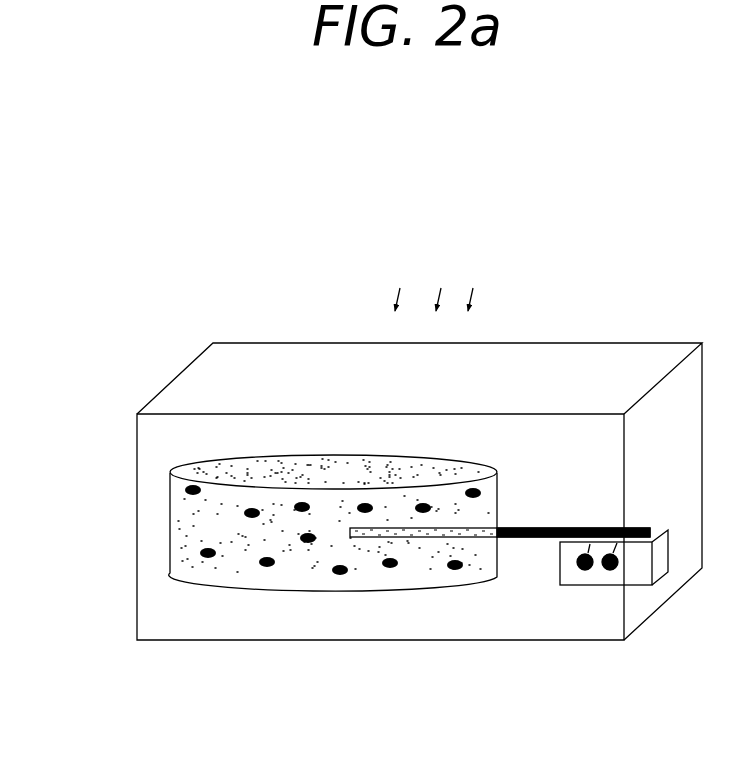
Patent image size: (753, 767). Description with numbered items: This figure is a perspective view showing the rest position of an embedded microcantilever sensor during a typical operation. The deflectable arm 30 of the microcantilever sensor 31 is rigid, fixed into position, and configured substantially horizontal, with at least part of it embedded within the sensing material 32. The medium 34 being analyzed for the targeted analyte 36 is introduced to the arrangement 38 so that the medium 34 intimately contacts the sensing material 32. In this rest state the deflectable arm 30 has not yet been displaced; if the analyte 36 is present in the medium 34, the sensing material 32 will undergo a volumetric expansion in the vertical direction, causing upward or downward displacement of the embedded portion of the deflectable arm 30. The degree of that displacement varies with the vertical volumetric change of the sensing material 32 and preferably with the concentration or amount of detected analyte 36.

The deflectable arm 30 is at (520, 540).
The microcantilever sensor 31 is at (612, 588).
The sensing material 32 is at (210, 508).
The medium 34 is at (347, 197).
The analyte 36 is at (450, 257).
The arrangement 38 is at (327, 373).